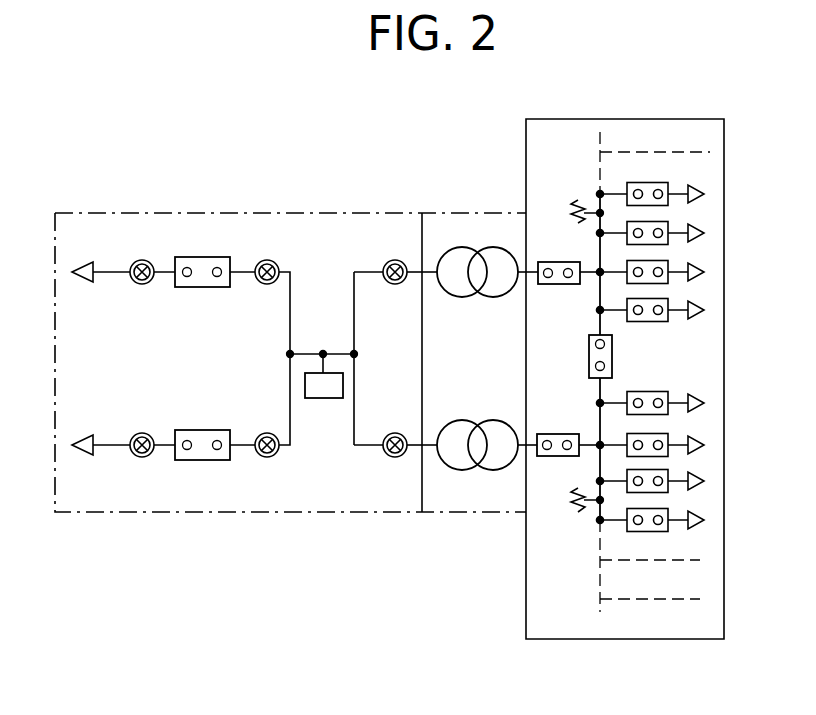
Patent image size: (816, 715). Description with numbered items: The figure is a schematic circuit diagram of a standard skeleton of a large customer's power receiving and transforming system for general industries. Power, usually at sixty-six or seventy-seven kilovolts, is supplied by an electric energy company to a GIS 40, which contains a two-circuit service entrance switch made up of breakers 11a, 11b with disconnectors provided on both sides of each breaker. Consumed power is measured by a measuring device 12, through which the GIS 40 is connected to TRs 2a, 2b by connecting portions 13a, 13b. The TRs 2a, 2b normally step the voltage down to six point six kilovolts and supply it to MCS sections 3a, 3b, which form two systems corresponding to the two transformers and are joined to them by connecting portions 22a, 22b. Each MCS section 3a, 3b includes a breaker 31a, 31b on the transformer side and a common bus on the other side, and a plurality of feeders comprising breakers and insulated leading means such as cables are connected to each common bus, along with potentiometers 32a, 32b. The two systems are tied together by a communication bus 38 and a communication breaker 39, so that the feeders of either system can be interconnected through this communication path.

The TR 2a is at (452, 247).
The TR 2b is at (460, 472).
The MCS section 3a is at (724, 188).
The MCS section 3b is at (724, 512).
The breaker 11a is at (193, 257).
The breaker 11b is at (207, 460).
The measuring device 12 is at (322, 398).
The connecting portion 13a is at (423, 258).
The connecting portion 13b is at (427, 462).
The connecting portion 22a is at (533, 262).
The connecting portion 22b is at (528, 457).
The breaker 31a is at (560, 262).
The breaker 31b is at (550, 460).
The potentiometer 32a is at (578, 202).
The potentiometer 32b is at (578, 513).
The communication bus 38 is at (600, 388).
The communication breaker 39 is at (612, 352).
The GIS 40 is at (230, 213).